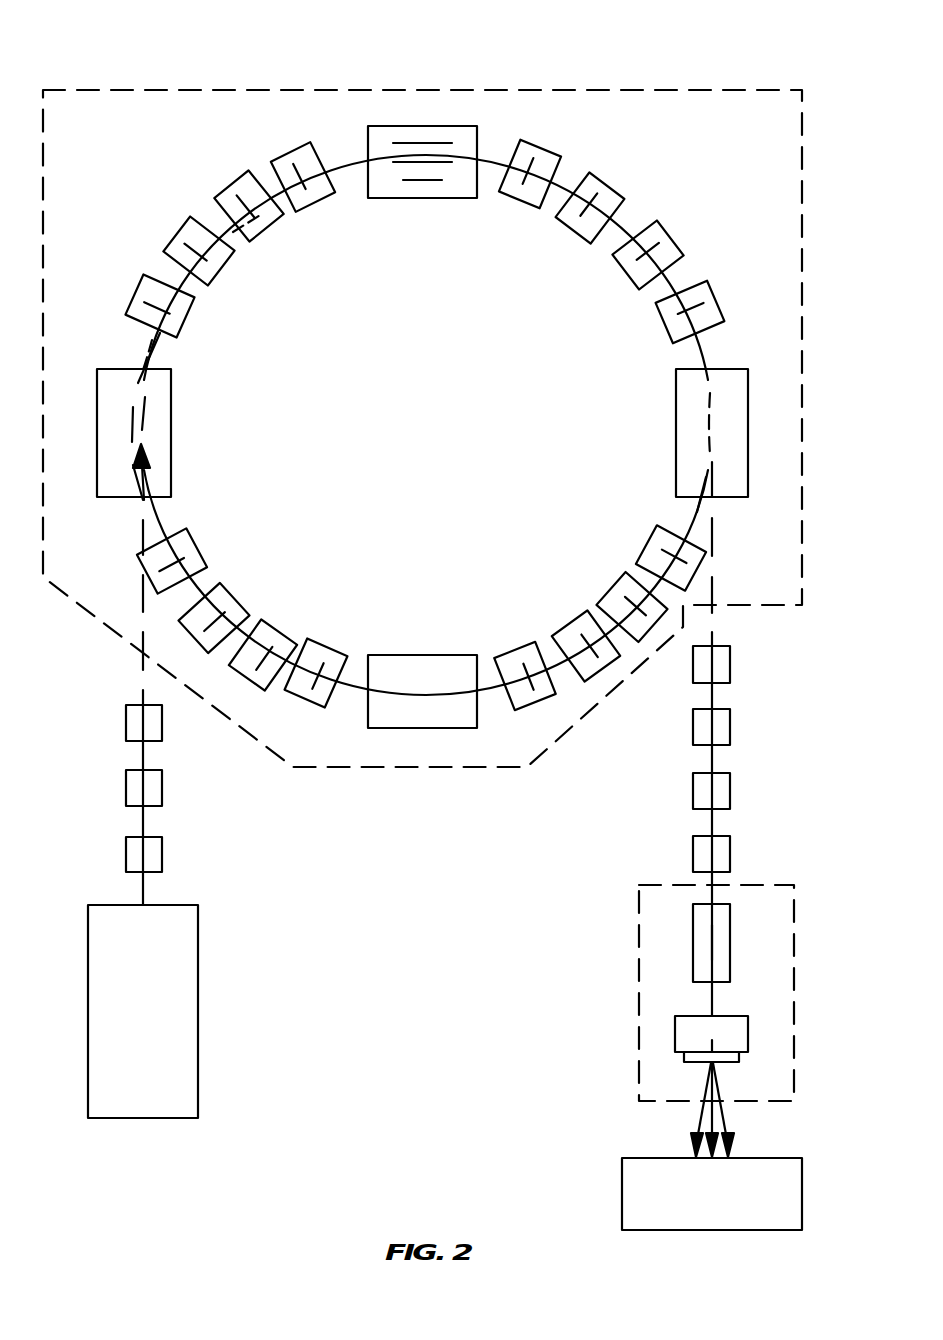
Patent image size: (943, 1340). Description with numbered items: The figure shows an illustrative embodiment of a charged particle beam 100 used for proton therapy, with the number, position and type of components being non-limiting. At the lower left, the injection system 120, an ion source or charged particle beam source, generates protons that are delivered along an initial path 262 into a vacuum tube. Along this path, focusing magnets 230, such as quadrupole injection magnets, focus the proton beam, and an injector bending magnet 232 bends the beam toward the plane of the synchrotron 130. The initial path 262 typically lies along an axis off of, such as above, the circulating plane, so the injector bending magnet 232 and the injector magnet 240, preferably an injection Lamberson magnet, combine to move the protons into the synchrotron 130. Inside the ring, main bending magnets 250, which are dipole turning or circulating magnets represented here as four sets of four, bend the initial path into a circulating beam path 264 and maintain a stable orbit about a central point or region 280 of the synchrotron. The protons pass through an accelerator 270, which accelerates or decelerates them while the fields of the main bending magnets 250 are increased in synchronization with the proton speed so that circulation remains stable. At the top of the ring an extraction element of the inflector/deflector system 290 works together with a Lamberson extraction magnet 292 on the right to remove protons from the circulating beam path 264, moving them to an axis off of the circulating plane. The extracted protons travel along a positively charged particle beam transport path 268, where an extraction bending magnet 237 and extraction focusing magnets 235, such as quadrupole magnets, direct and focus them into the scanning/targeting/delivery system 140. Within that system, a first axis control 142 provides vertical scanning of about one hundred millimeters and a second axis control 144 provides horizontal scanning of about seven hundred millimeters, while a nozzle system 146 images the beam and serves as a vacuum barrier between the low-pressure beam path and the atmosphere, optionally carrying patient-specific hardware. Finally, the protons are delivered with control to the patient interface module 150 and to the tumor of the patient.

The charged particle beam 100 is at (725, 48).
The synchrotron 130 is at (592, 90).
The central point or region 280 is at (440, 428).
The main bending magnets 250 is at (296, 143).
The circulating beam path 264 is at (363, 156).
The inflector/deflector system 290 is at (440, 127).
The accelerator 270 is at (420, 728).
The injector magnet 240 is at (112, 369).
The Lamberson extraction magnet 292 is at (733, 369).
The positively charged particle beam transport path 268 is at (712, 587).
The extraction focusing magnets 235 is at (722, 648).
The extraction bending magnet 237 is at (722, 712).
The scanning/targeting/delivery system 140 is at (760, 885).
The first axis control 142 is at (733, 965).
The second axis control 144 is at (727, 1015).
The nozzle system 146 is at (722, 1062).
The patient interface module 150 is at (782, 1158).
The initial path 262 is at (143, 891).
The injector bending magnet 232 is at (128, 705).
The focusing magnets 230 is at (128, 770).
The injection system 120 is at (118, 905).